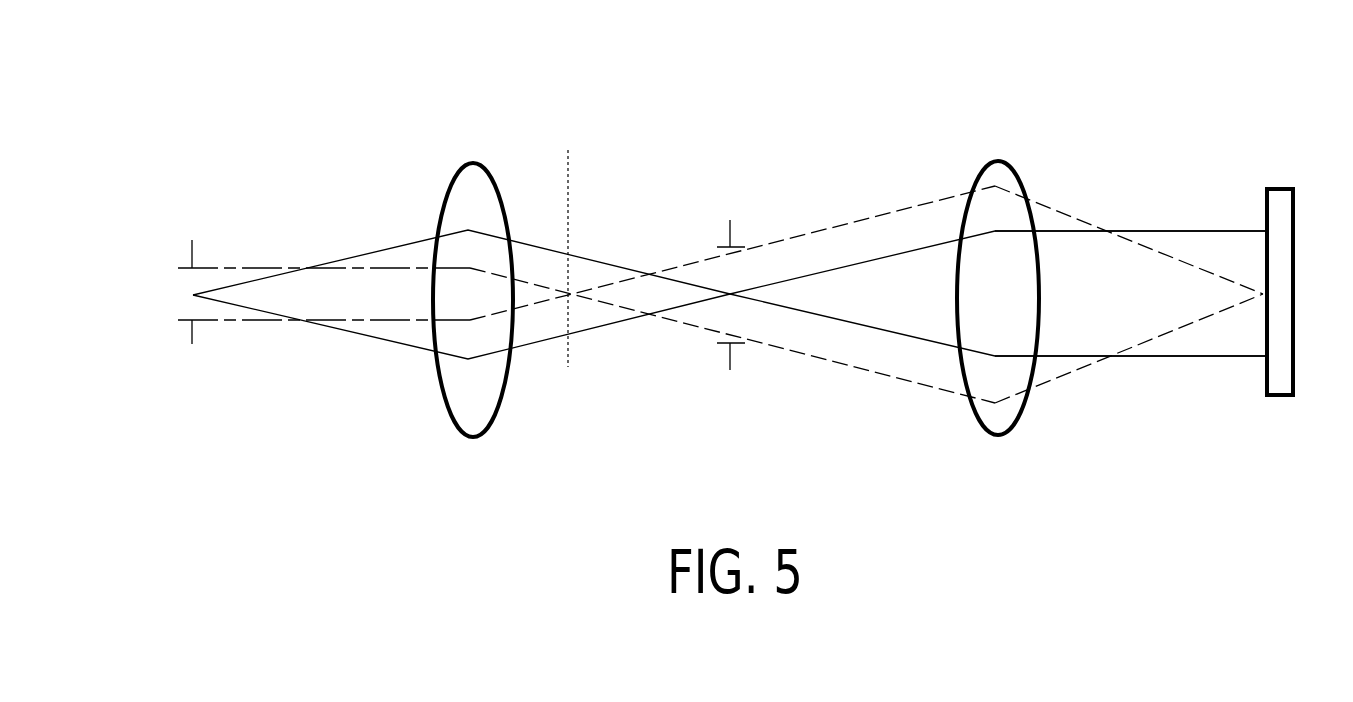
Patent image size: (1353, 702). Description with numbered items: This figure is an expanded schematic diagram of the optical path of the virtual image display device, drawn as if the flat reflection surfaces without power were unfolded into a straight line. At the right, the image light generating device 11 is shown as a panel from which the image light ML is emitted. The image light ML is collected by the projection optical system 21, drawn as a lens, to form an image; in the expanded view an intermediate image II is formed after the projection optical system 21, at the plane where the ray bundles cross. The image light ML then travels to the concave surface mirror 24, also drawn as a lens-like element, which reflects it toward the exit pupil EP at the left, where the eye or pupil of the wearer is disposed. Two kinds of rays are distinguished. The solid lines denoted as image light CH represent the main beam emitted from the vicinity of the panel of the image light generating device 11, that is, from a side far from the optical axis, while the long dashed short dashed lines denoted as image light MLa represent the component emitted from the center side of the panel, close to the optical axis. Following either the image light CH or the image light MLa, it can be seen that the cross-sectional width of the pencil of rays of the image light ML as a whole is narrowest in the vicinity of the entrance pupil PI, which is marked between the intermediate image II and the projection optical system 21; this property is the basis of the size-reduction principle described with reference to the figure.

The image light generating device 11 is at (1272, 167).
The projection optical system 21 is at (988, 143).
The concave surface mirror 24 is at (462, 152).
The exit pupil EP is at (190, 213).
The entrance pupil PI is at (728, 205).
The intermediate image II is at (568, 160).
The image light ML is at (1141, 286).
The image light (center component) MLa is at (1067, 213).
The image light (main beam) CH is at (1193, 228).